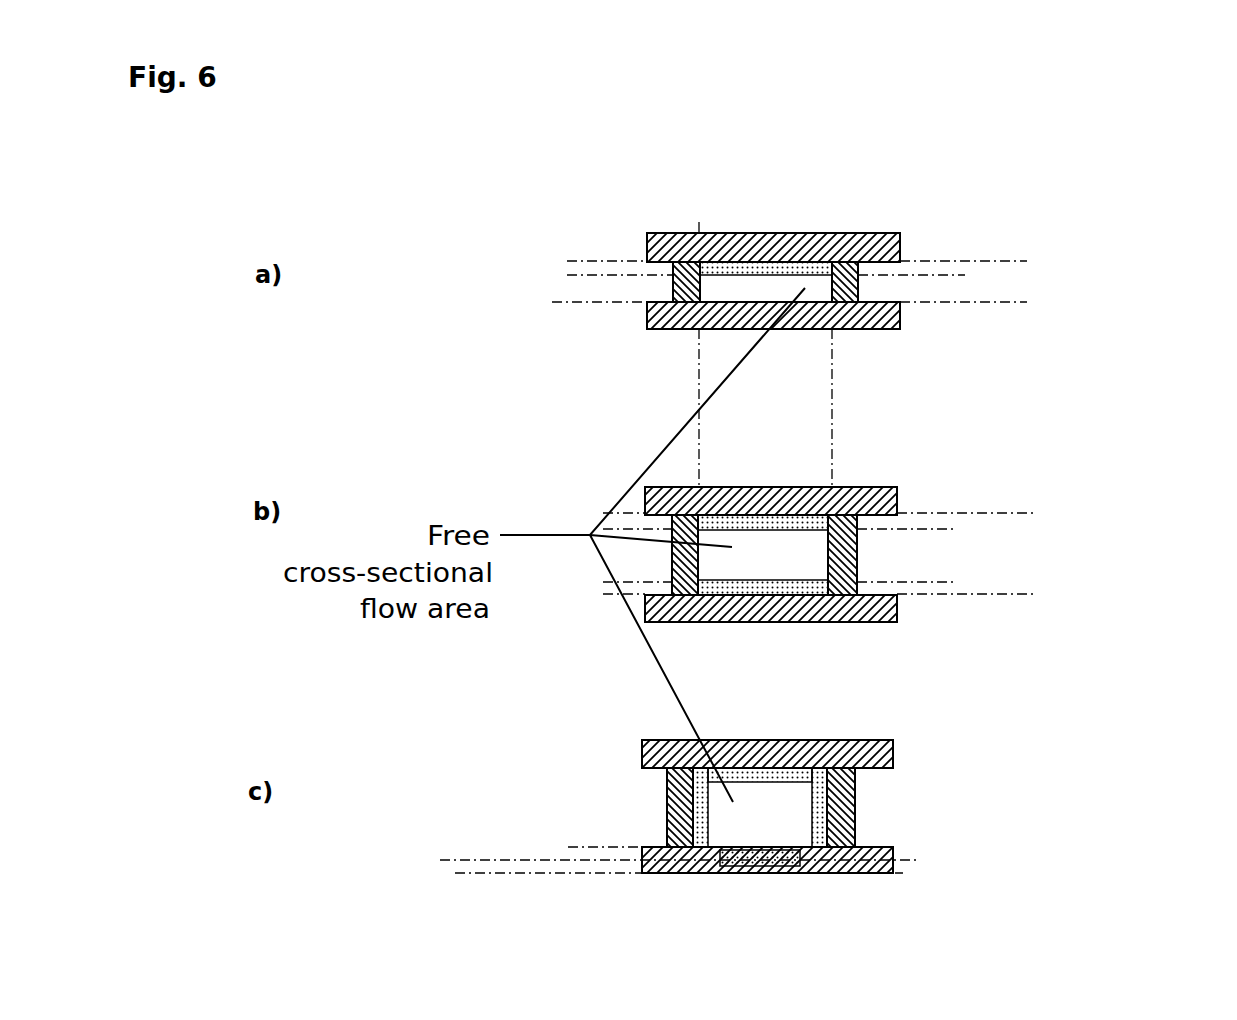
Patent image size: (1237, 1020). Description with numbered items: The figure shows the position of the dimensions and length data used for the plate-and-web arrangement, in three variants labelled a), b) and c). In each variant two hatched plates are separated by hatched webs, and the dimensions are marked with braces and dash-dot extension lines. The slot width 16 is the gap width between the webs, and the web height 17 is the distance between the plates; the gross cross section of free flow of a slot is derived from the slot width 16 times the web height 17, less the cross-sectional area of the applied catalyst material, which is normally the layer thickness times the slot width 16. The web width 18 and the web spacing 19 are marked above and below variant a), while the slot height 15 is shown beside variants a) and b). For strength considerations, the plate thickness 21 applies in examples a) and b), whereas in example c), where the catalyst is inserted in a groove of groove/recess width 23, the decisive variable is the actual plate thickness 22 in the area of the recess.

The slot height 15 is at (949, 582).
The slot width 16 is at (699, 375).
The web height 17 is at (1026, 594).
The web width 18 is at (674, 329).
The web spacing 19 is at (674, 185).
The plate thickness 21 is at (572, 873).
The actual plate thickness 22 is at (462, 873).
The groove/recess width 23 is at (720, 820).